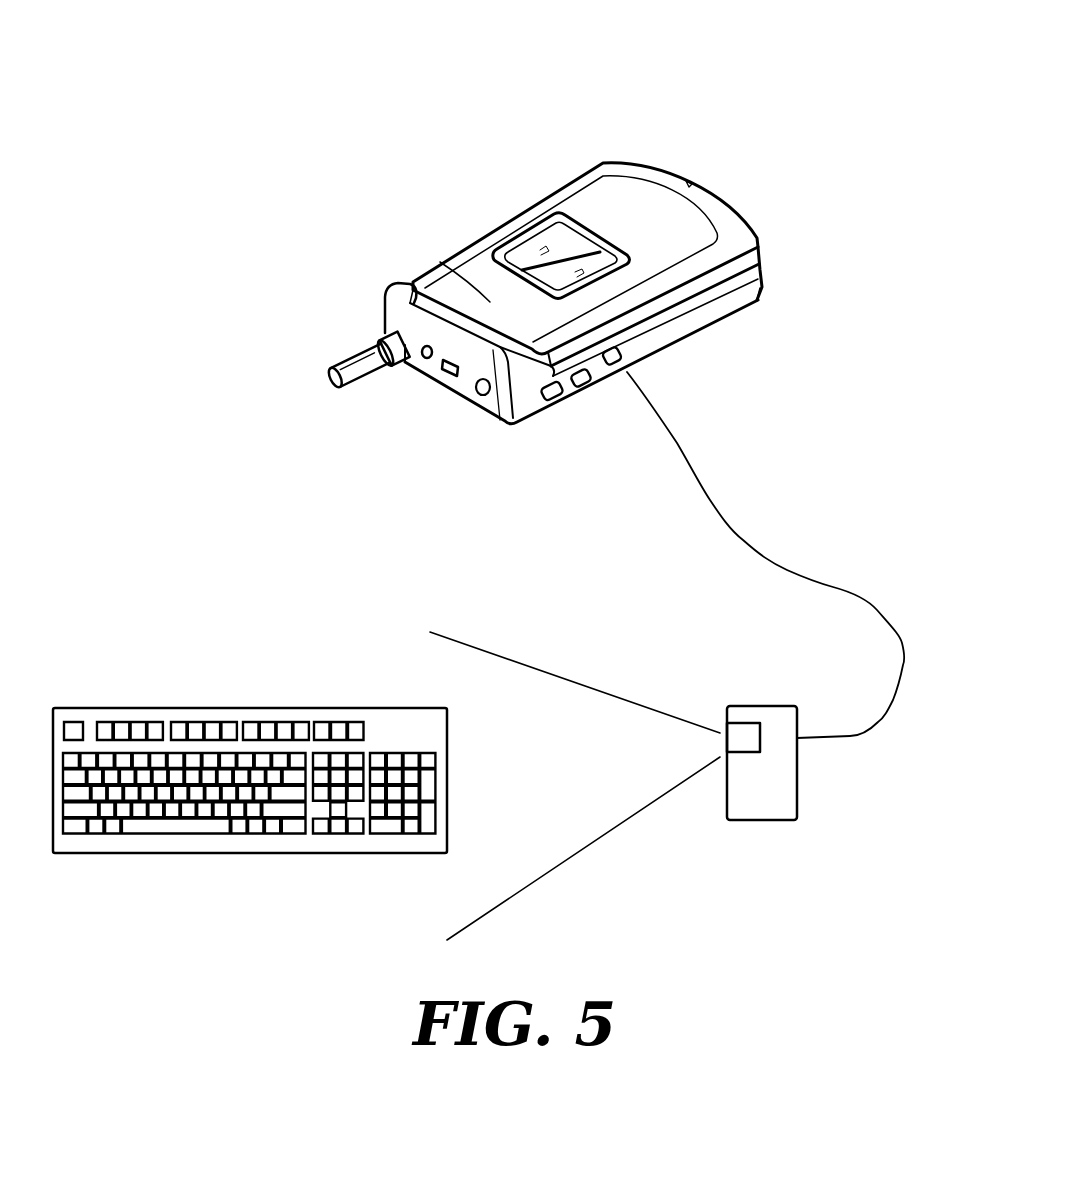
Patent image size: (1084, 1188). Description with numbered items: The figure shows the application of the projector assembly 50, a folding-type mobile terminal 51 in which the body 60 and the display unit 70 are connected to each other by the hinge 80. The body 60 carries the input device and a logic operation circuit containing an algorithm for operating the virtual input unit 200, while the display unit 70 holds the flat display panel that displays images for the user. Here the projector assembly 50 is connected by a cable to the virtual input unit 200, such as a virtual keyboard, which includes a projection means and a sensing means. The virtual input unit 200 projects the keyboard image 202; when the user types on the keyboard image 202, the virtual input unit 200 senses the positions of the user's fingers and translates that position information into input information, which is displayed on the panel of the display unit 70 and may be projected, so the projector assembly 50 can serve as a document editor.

The projector assembly 50 is at (277, 196).
The mobile terminal 51 is at (725, 202).
The body 60 is at (609, 188).
The display unit 70 is at (719, 341).
The hinge 80 is at (443, 322).
The keyboard image 202 is at (216, 707).
The virtual input unit 200 is at (798, 787).